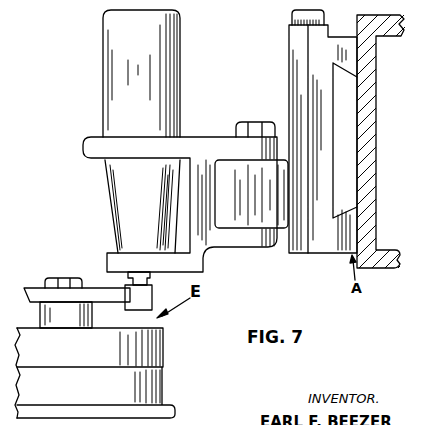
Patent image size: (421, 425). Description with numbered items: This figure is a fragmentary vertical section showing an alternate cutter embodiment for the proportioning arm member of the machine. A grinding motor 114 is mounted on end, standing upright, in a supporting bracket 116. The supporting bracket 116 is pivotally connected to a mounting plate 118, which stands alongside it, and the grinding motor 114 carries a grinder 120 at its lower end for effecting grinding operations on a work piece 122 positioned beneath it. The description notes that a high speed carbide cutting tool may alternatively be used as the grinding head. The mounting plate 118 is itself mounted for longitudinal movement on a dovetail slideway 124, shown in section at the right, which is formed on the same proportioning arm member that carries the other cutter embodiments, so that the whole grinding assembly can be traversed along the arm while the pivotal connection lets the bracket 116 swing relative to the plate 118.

The grinding motor 114 is at (157, 48).
The supporting bracket 116 is at (193, 258).
The mounting plate 118 is at (299, 245).
The grinder 120 is at (130, 290).
The work piece 122 is at (57, 295).
The dovetail slideway 124 is at (343, 110).